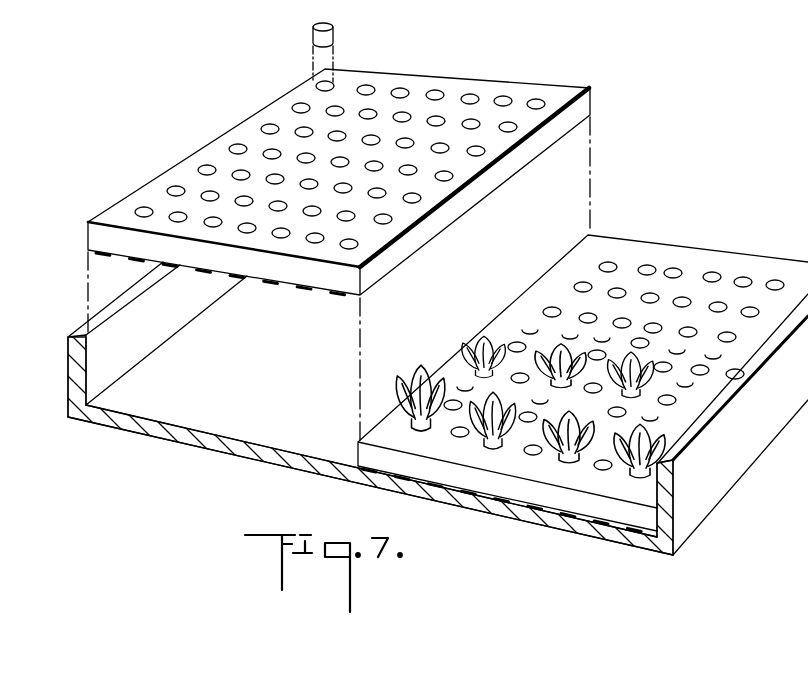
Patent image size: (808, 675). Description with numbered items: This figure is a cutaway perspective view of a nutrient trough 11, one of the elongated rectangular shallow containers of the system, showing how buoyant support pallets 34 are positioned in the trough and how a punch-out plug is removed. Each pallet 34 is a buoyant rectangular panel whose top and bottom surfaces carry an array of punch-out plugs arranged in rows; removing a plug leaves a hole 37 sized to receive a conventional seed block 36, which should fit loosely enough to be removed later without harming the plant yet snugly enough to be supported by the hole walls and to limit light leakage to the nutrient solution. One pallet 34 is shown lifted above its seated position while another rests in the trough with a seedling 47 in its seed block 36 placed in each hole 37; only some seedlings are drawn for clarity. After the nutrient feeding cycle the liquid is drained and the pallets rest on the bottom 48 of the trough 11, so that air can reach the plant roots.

The trough 11 is at (760, 477).
The pallet 34 is at (473, 82).
The seed block 36 is at (335, 25).
The hole 37 is at (320, 84).
The seedling 47 is at (402, 376).
The bottom 48 is at (488, 518).